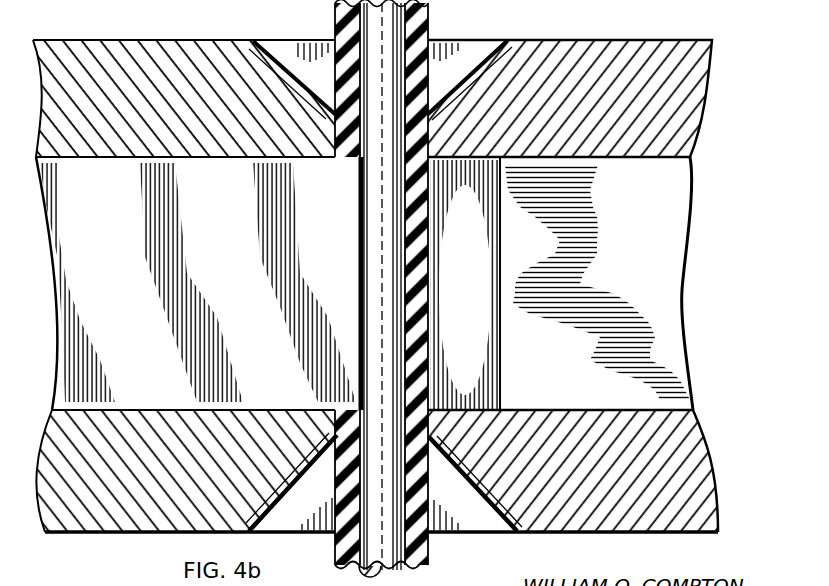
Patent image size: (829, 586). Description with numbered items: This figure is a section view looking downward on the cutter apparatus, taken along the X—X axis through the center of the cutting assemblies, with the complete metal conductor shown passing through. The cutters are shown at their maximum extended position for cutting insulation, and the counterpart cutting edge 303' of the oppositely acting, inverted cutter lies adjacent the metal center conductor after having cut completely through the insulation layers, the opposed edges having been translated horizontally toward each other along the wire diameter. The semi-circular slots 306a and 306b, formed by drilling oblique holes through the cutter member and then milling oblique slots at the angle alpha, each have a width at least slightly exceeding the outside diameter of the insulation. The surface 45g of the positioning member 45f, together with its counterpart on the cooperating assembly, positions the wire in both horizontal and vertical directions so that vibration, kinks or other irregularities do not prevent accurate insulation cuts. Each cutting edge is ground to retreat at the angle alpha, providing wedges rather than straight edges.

The semi-circular slot 306a is at (500, 42).
The semi-circular slot 306b is at (514, 532).
The cutting edge of cooperating cutter 303' is at (336, 283).
The surface of positioning member 45g is at (473, 266).
The positioning member 45f is at (645, 276).